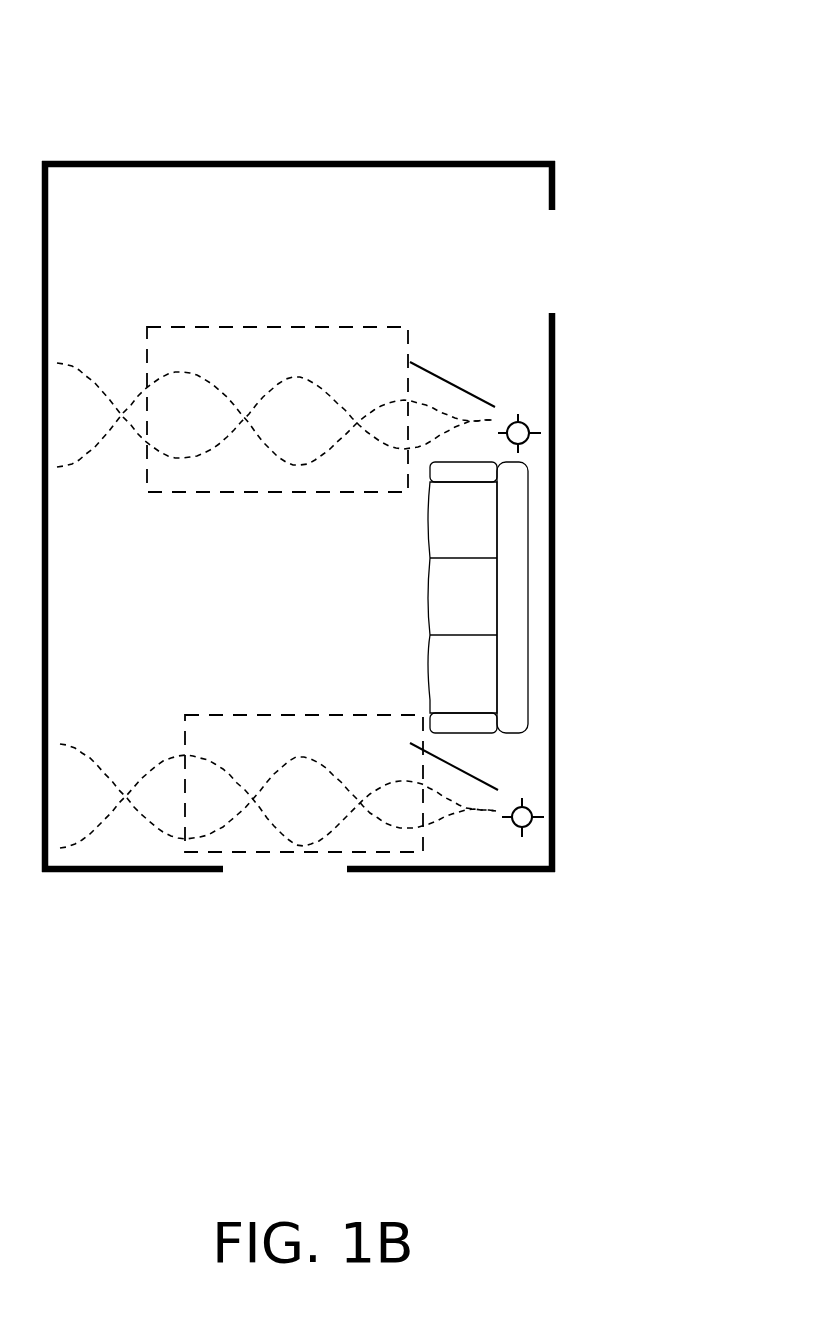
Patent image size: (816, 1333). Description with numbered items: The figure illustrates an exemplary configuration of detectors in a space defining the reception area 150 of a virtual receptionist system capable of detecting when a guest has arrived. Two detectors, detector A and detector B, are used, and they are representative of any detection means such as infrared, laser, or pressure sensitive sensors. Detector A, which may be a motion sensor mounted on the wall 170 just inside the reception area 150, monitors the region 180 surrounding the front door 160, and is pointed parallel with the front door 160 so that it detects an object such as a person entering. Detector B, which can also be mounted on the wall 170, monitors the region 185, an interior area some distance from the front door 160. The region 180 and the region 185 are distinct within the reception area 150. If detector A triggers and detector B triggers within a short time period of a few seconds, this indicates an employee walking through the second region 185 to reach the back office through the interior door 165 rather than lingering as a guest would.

The reception area 150 is at (630, 41).
The front door 160 is at (318, 920).
The interior door 165 is at (570, 251).
The wall 170 is at (557, 668).
The region 180 is at (200, 718).
The region 185 is at (168, 322).